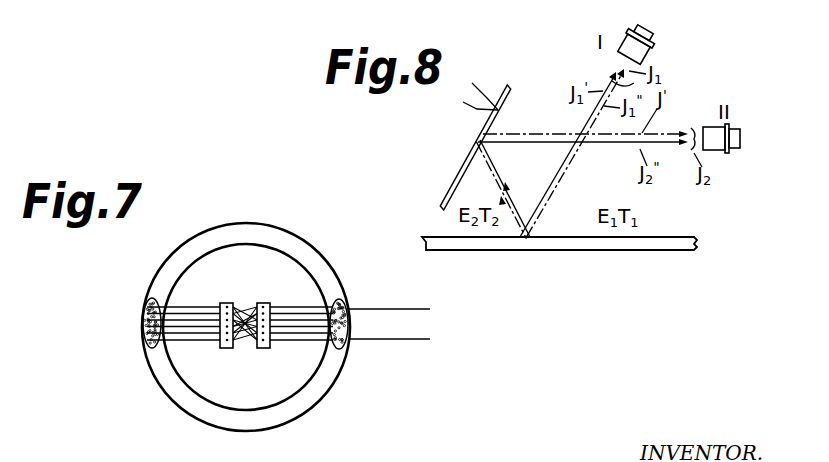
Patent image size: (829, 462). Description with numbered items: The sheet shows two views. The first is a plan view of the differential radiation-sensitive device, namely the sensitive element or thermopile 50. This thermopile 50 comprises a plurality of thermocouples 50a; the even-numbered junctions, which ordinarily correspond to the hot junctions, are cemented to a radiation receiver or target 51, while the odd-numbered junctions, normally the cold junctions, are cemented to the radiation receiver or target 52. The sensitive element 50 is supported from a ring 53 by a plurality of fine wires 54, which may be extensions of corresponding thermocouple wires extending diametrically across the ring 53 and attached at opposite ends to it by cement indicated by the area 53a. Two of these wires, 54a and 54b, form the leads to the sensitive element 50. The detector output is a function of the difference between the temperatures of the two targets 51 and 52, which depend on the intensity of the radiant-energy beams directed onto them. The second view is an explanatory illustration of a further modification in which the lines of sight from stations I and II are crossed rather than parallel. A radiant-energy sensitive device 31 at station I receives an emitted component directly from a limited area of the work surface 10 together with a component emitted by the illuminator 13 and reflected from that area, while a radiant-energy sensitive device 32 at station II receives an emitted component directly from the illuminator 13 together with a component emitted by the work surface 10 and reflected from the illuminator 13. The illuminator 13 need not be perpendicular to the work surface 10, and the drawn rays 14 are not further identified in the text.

In FIG. 8, the work surface 10 is at (670, 237).
In FIG. 8, the illuminator 13 is at (511, 92).
In FIG. 8, the incident light rays 14 is at (477, 109).
In FIG. 8, the photodetector I 31 is at (655, 42).
In FIG. 8, the photodetector II 32 is at (742, 140).
In FIG. 7, the sensitive element 50 is at (260, 278).
In FIG. 7, the thermocouples 50a is at (247, 342).
In FIG. 7, the radiation receiver 51 is at (221, 347).
In FIG. 7, the radiation receiver 52 is at (266, 347).
In FIG. 7, the ring 53 is at (330, 273).
In FIG. 7, the cement area 53a is at (143, 323).
In FIG. 7, the fine wires 54 is at (288, 329).
In FIG. 7, the lead wire 54a is at (291, 294).
In FIG. 7, the lead wire 54b is at (317, 341).